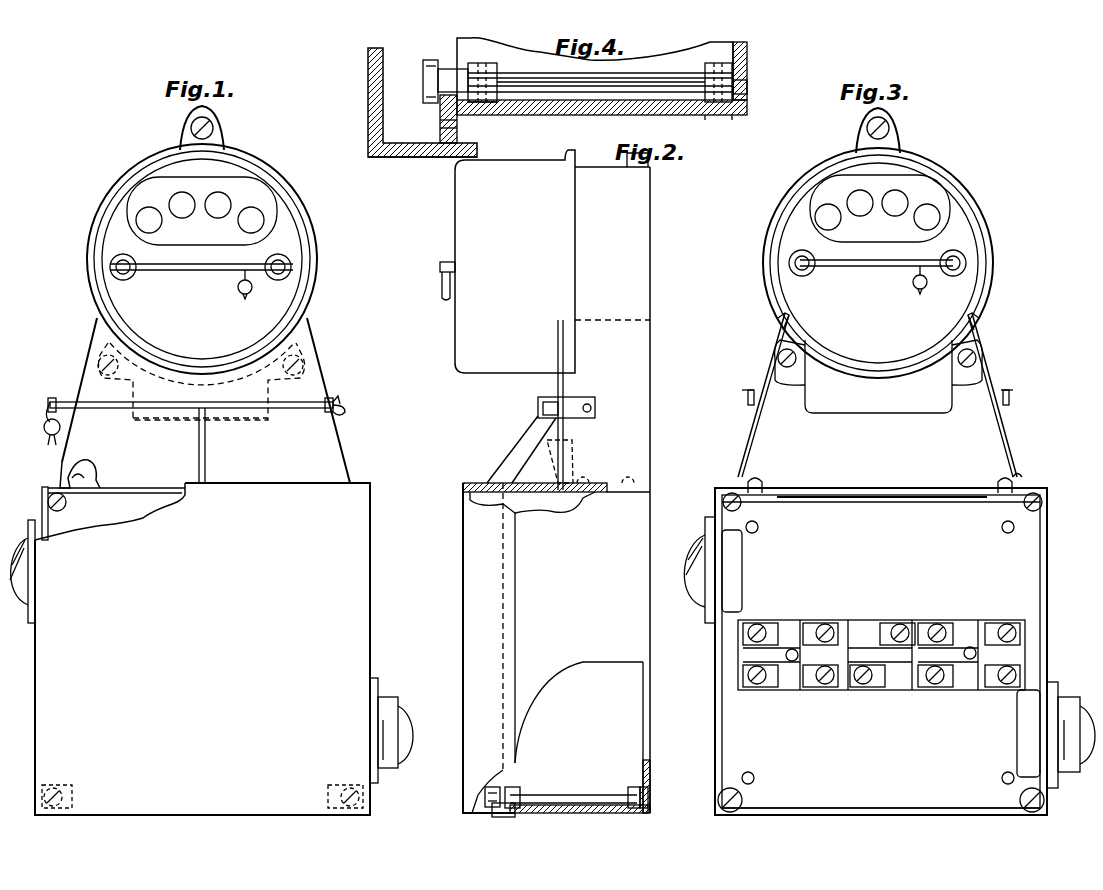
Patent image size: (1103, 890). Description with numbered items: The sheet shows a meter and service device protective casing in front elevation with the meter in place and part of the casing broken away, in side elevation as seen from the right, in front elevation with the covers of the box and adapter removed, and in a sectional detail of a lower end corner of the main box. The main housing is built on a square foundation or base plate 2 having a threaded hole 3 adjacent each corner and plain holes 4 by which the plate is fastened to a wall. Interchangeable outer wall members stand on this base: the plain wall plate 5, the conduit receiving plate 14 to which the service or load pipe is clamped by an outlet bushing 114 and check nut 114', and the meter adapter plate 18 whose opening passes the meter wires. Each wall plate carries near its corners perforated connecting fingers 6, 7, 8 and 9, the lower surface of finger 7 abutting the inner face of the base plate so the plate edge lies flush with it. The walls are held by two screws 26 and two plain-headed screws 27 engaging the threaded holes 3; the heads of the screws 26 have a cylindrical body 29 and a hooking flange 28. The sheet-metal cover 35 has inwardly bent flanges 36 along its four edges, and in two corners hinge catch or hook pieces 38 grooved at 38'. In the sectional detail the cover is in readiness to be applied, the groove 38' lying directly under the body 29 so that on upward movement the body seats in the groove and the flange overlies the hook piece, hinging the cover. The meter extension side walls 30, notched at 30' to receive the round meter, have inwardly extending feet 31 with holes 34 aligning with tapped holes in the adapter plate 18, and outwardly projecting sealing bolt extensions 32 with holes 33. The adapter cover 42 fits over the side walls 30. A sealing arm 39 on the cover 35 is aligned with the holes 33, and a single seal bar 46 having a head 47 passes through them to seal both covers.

In FIG. 1, the plate 2 is at (110, 511).
In FIG. 4, the plate 2 is at (747, 48).
In FIG. 2, the plate 2 is at (645, 708).
In FIG. 3, the plate 2 is at (854, 603).
In FIG. 4, the threaded hole 3 is at (747, 82).
In FIG. 2, the threaded hole 3 is at (650, 813).
In FIG. 2, the plain hole 4 is at (648, 778).
In FIG. 3, the plain hole 4 is at (758, 527).
In FIG. 4, the plain wall plate 5 is at (595, 115).
In FIG. 2, the plain wall plate 5 is at (575, 813).
In FIG. 3, the plain wall plate 5 is at (862, 812).
In FIG. 4, the connecting finger 6 is at (490, 63).
In FIG. 4, the connecting finger 7 is at (718, 63).
In FIG. 4, the connecting finger 8 is at (480, 115).
In FIG. 4, the connecting finger 9 is at (718, 115).
In FIG. 4, the conduit receiving plate 14 is at (601, 65).
In FIG. 2, the conduit receiving plate 14 is at (579, 712).
In FIG. 3, the conduit receiving plate 14 is at (1047, 565).
In FIG. 1, the meter adapter plate 18 is at (142, 488).
In FIG. 2, the meter adapter plate 18 is at (528, 500).
In FIG. 3, the meter adapter plate 18 is at (858, 498).
In FIG. 1, the screw 26 is at (60, 788).
In FIG. 4, the screw 26 is at (515, 73).
In FIG. 2, the screw 26 is at (572, 795).
In FIG. 3, the screw 26 is at (742, 800).
In FIG. 1, the screw 27 is at (42, 500).
In FIG. 3, the screw 27 is at (742, 504).
In FIG. 4, the flange 28 is at (423, 60).
In FIG. 2, the flange 28 is at (498, 788).
In FIG. 4, the cylindrical body 29 is at (448, 69).
In FIG. 2, the side wall 30 is at (627, 483).
In FIG. 3, the side wall 30 is at (880, 395).
In FIG. 2, the notch 30' is at (612, 333).
In FIG. 3, the notch 30' is at (882, 326).
In FIG. 1, the foot 31 is at (97, 478).
In FIG. 2, the foot 31 is at (607, 478).
In FIG. 3, the foot 31 is at (983, 478).
In FIG. 1, the sealing bolt holding extension 32 is at (66, 400).
In FIG. 2, the sealing bolt holding extension 32 is at (570, 400).
In FIG. 3, the sealing bolt holding extension 32 is at (745, 408).
In FIG. 1, the hole 33 is at (62, 410).
In FIG. 2, the hole 33 is at (543, 408).
In FIG. 3, the hole 33 is at (748, 394).
In FIG. 3, the hole 34 is at (1020, 476).
In FIG. 1, the cover 35 is at (190, 649).
In FIG. 4, the cover 35 is at (368, 95).
In FIG. 2, the cover 35 is at (463, 545).
In FIG. 4, the flange 36 is at (380, 157).
In FIG. 2, the flange 36 is at (515, 598).
In FIG. 1, the hinge catch piece 38 is at (202, 795).
In FIG. 4, the hinge catch piece 38 is at (431, 141).
In FIG. 2, the hinge catch piece 38 is at (498, 821).
In FIG. 4, the groove 38' is at (427, 120).
In FIG. 1, the sealing arm 39 is at (206, 460).
In FIG. 2, the sealing arm 39 is at (518, 450).
In FIG. 1, the cover 42 is at (338, 440).
In FIG. 2, the cover 42 is at (557, 348).
In FIG. 1, the seal bar 46 is at (294, 410).
In FIG. 1, the head 47 is at (342, 404).
In FIG. 1, the outlet bushing 114 is at (399, 722).
In FIG. 3, the outlet bushing 114 is at (1077, 726).
In FIG. 1, the check nut 114' is at (392, 718).
In FIG. 3, the check nut 114' is at (1054, 724).